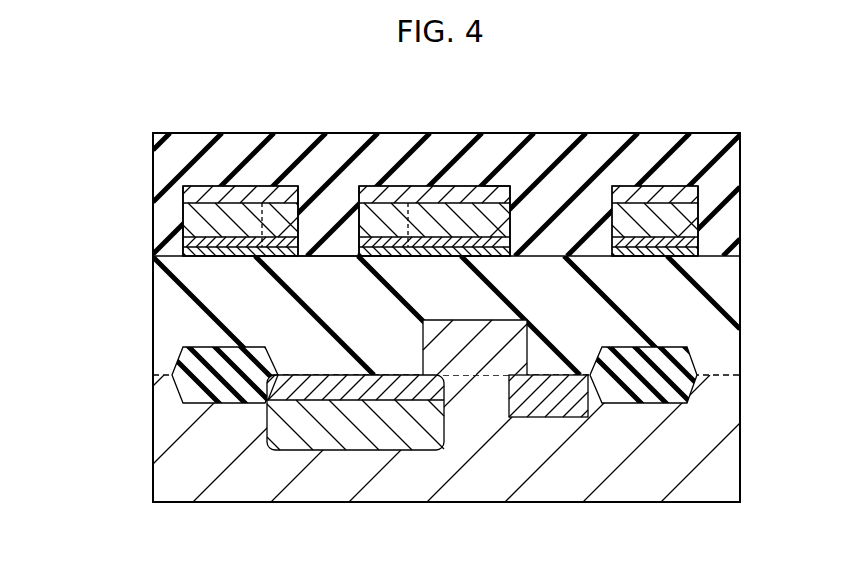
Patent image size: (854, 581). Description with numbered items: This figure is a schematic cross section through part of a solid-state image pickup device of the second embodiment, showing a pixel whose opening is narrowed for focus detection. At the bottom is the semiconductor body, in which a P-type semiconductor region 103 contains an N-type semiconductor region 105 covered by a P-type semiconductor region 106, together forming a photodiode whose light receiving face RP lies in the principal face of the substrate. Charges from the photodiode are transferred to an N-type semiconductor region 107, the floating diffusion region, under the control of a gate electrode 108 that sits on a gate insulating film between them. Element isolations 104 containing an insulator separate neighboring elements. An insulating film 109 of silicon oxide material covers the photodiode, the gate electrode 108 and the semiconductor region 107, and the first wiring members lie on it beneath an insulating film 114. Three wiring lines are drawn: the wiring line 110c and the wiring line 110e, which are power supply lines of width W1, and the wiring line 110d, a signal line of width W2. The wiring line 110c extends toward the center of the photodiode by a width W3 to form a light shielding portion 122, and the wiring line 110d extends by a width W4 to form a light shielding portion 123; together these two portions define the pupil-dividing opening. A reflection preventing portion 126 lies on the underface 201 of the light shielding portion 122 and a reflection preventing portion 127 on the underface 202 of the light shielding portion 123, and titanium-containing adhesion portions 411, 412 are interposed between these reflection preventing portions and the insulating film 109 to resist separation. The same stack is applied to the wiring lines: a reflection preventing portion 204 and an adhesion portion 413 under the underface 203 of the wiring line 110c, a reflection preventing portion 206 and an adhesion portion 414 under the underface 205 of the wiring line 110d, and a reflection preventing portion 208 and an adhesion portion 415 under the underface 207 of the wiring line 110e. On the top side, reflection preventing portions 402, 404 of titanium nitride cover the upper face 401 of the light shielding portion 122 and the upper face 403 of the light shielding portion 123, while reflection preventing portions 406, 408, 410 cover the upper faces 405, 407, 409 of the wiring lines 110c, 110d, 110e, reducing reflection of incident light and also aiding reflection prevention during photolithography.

The P-type semiconductor region 103 is at (177, 467).
The element isolation 104 is at (190, 393).
The N-type semiconductor region 105 is at (283, 393).
The P-type semiconductor region 106 is at (350, 459).
The N-type semiconductor region 107 is at (548, 405).
The gate electrode 108 is at (483, 363).
The insulating film 109 is at (725, 342).
The insulating film 114 is at (725, 162).
The wiring line 110c is at (190, 181).
The wiring line 110d is at (449, 203).
The wiring line 110e is at (694, 191).
The light shielding portion 122 is at (263, 203).
The light shielding portion 123 is at (408, 203).
The reflection preventing portion 126 is at (297, 252).
The reflection preventing portion 127 is at (380, 257).
The underface 201 is at (300, 240).
The underface 202 is at (358, 257).
The underface 203 is at (195, 251).
The reflection preventing portion 204 is at (195, 240).
The underface 205 is at (511, 240).
The reflection preventing portion 206 is at (507, 256).
The underface 207 is at (698, 240).
The reflection preventing portion 208 is at (613, 250).
The upper face 401 is at (323, 190).
The reflection preventing portion 402 is at (300, 186).
The upper face 403 is at (358, 195).
The reflection preventing portion 404 is at (355, 203).
The upper face 405 is at (185, 188).
The reflection preventing portion 406 is at (185, 186).
The upper face 407 is at (510, 186).
The reflection preventing portion 408 is at (510, 186).
The upper face 409 is at (698, 192).
The reflection preventing portion 410 is at (698, 186).
The adhesion portion 411 is at (245, 258).
The adhesion portion 412 is at (407, 257).
The adhesion portion 413 is at (215, 252).
The adhesion portion 414 is at (452, 257).
The adhesion portion 415 is at (655, 257).
The light receiving face RP is at (293, 363).
The width W1 is at (262, 163).
The width W2 is at (408, 163).
The width W3 is at (262, 163).
The width W4 is at (408, 163).